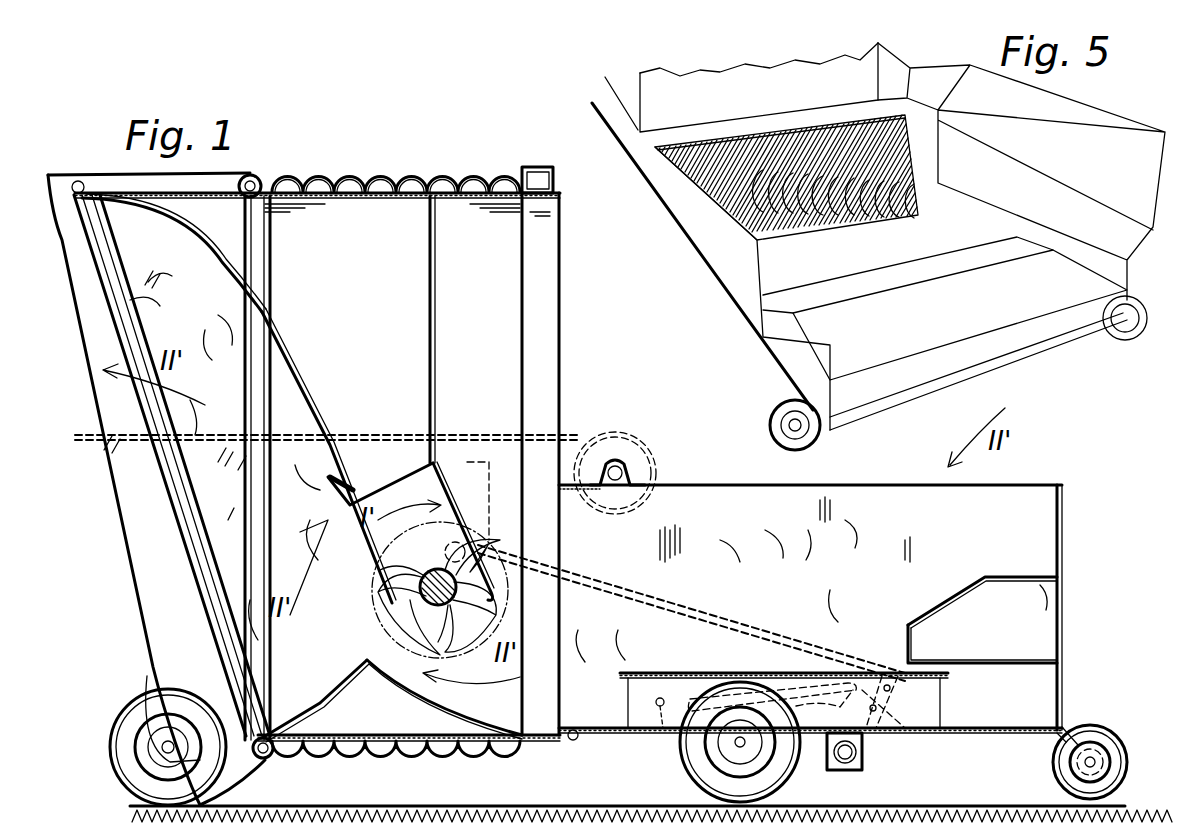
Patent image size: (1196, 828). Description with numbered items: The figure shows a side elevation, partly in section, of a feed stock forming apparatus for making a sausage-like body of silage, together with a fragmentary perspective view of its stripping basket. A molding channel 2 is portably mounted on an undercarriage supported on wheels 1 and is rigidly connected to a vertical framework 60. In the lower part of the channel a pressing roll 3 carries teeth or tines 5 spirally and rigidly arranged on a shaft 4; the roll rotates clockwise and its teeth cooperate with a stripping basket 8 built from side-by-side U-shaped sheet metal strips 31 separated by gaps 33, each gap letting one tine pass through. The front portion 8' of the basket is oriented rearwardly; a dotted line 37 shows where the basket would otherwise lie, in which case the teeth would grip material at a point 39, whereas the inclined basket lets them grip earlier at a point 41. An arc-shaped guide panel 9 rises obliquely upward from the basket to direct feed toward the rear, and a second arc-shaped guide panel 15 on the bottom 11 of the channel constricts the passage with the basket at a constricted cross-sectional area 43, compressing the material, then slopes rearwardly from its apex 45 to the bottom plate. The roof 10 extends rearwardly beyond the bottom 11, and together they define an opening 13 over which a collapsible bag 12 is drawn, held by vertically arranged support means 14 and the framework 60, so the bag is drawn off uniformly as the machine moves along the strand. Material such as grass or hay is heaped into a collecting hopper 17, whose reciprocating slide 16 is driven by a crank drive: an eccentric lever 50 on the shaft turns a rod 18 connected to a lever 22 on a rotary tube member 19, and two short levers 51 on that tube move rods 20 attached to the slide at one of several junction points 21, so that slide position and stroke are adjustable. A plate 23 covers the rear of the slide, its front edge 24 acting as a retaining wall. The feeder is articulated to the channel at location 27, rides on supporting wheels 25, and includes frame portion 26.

In FIG. 1, the wheels 1 is at (138, 775).
In FIG. 1, the molding channel 2 is at (524, 406).
In FIG. 1, the pressing roll 3 is at (404, 612).
In FIG. 1, the shaft 4 is at (450, 640).
In FIG. 1, the teeth or tines 5 is at (372, 591).
In FIG. 5, the teeth or tines 5 is at (748, 199).
In FIG. 1, the stripping basket 8 is at (347, 456).
In FIG. 5, the stripping basket 8 is at (902, 171).
In FIG. 1, the front portion of the basket 8' is at (452, 329).
In FIG. 1, the guide panel or deflector 9 is at (215, 265).
In FIG. 1, the roof or top cover 10 is at (214, 218).
In FIG. 1, the bottom of the forming channel 11 is at (352, 726).
In FIG. 1, the collapsible bag 12 is at (386, 183).
In FIG. 1, the opening 13 is at (322, 174).
In FIG. 1, the support means 14 is at (248, 408).
In FIG. 1, the arc-shaped guide panel 15 is at (447, 705).
In FIG. 1, the reciprocating slide 16 is at (646, 722).
In FIG. 1, the collecting hopper 17 is at (796, 478).
In FIG. 5, the collecting hopper 17 is at (794, 470).
In FIG. 1, the rod 18 is at (696, 613).
In FIG. 1, the rotary tube member 19 is at (863, 766).
In FIG. 1, the rods 20 is at (735, 695).
In FIG. 1, the junction points 21 is at (665, 732).
In FIG. 1, the lever 22 is at (893, 734).
In FIG. 1, the plate 23 is at (946, 605).
In FIG. 1, the front edge 24 is at (906, 641).
In FIG. 1, the supporting wheels 25 is at (1060, 781).
In FIG. 5, the supporting wheels 25 is at (772, 418).
In FIG. 1, the bottom frame 26 is at (1016, 734).
In FIG. 1, the articulated location 27 is at (576, 742).
In FIG. 5, the U-shaped sheet metal strips 31 is at (800, 132).
In FIG. 5, the gaps 33 is at (736, 140).
In FIG. 1, the dotted line 37 is at (490, 493).
In FIG. 1, the point 39 is at (480, 556).
In FIG. 1, the point 41 is at (478, 517).
In FIG. 1, the constricted cross-sectional area 43 is at (376, 650).
In FIG. 1, the apex 45 is at (360, 670).
In FIG. 1, the eccentric lever 50 is at (445, 552).
In FIG. 1, the short levers 51 is at (807, 709).
In FIG. 1, the vertical framework 60 is at (556, 253).